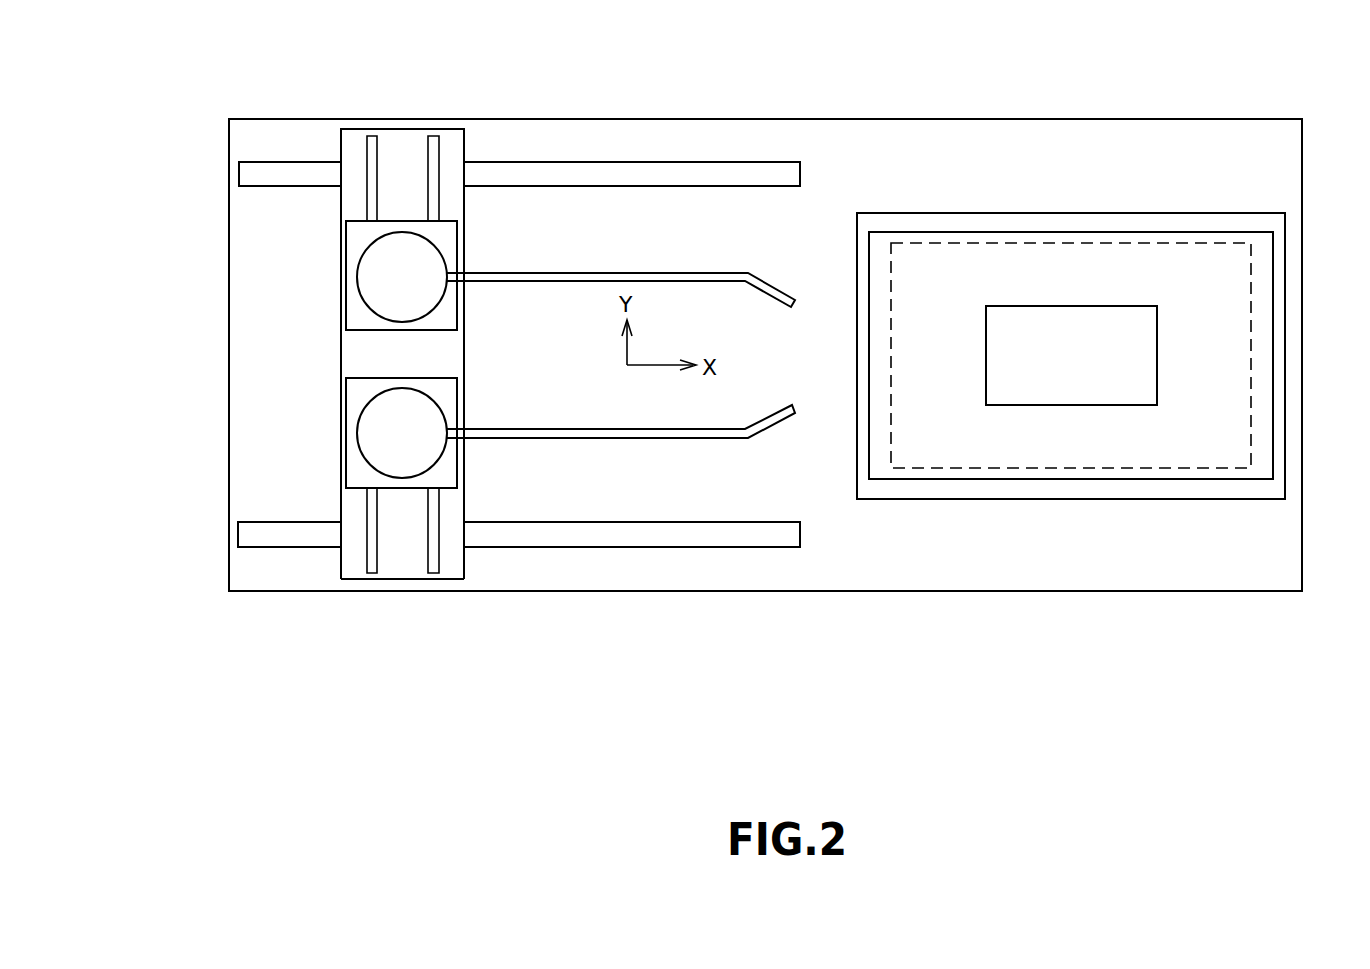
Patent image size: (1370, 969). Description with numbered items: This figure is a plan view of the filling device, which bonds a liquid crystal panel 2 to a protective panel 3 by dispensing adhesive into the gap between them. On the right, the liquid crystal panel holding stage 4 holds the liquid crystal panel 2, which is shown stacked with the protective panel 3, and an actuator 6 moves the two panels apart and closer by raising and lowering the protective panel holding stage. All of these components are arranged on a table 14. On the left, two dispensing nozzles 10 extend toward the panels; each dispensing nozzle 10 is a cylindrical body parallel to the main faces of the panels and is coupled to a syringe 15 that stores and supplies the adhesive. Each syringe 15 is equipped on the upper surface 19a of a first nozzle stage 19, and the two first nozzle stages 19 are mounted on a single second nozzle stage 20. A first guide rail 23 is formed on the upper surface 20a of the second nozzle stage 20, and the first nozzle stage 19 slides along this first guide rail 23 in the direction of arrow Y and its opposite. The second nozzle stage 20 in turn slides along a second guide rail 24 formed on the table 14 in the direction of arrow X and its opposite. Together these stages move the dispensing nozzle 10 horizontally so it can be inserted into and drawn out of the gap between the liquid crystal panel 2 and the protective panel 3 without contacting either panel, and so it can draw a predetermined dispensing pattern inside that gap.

The liquid crystal panel 2 is at (1251, 378).
The protective panel 3 is at (1273, 413).
The liquid crystal panel holding stage 4 is at (1285, 452).
The actuator 6 is at (1157, 332).
The dispensing nozzle 10 is at (600, 273).
The table 14 is at (1065, 593).
The syringe 15 is at (399, 278).
The first nozzle stage 19 is at (313, 355).
The upper surface 19a is at (356, 237).
The second nozzle stage 20 is at (385, 416).
The upper surface 20a is at (353, 563).
The first guide rail 23 is at (369, 575).
The second guide rail 24 is at (698, 162).